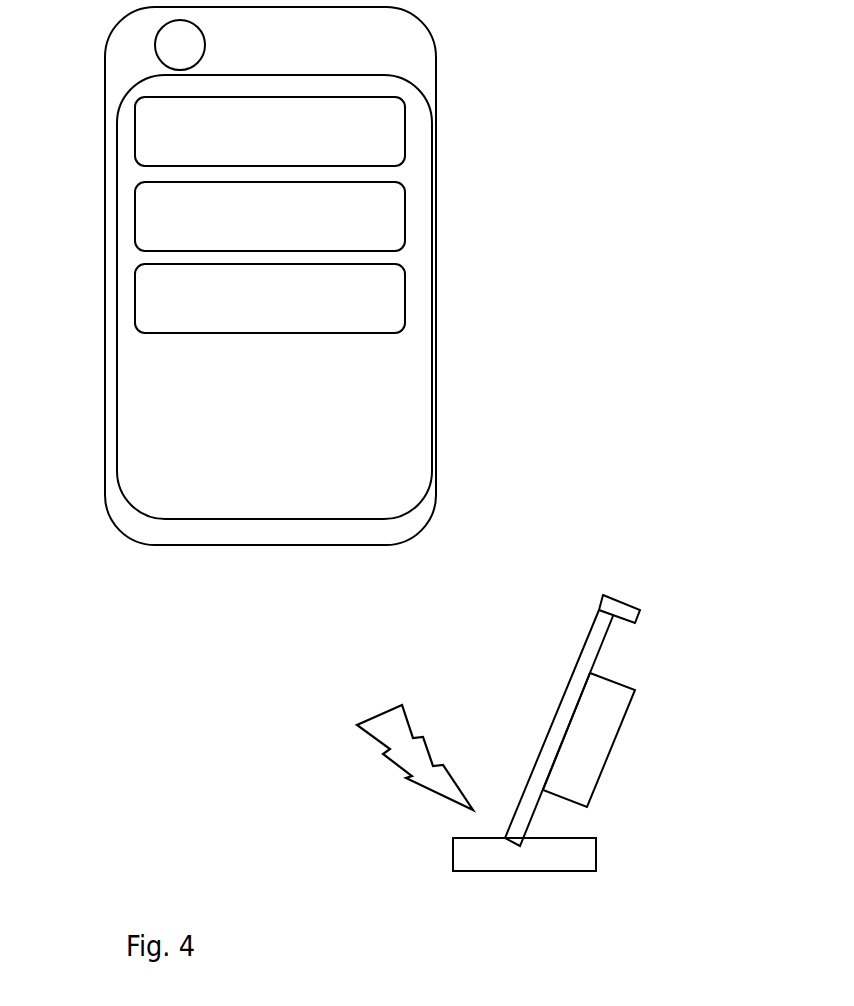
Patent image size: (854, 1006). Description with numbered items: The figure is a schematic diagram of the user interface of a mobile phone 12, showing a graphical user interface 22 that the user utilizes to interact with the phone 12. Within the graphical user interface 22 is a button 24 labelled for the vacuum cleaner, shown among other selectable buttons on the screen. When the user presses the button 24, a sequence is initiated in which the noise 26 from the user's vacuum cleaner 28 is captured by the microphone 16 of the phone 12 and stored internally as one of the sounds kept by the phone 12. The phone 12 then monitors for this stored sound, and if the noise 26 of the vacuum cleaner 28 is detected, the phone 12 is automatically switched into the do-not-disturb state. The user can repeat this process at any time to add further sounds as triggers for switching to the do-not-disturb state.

The mobile phone 12 is at (437, 213).
The microphone 16 is at (155, 48).
The graphical user interface 22 is at (117, 345).
The button 24 is at (405, 290).
The noise 26 is at (385, 754).
The vacuum cleaner 28 is at (640, 611).